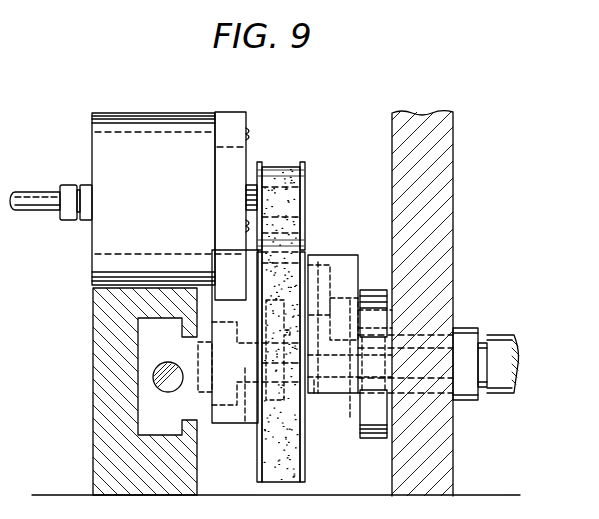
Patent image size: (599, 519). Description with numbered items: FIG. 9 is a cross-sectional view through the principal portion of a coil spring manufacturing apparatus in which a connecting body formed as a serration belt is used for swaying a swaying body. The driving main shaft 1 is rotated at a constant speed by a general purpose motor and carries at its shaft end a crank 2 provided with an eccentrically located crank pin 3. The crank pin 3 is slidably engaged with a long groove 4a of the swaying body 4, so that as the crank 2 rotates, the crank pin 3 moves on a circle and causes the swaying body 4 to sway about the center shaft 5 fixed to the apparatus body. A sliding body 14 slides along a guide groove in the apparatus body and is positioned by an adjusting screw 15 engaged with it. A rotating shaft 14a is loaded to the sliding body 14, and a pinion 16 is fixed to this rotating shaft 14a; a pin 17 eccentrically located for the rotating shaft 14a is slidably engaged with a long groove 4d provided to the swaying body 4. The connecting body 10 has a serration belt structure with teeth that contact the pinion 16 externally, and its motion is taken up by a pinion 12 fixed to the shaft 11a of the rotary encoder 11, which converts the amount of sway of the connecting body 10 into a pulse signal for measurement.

The driving main shaft 1 is at (498, 350).
The crank 2 is at (371, 292).
The crank pin 3 is at (366, 290).
The swaying body 4 is at (338, 256).
The long groove 4a is at (349, 420).
The long groove 4d is at (316, 396).
The center shaft 5 is at (490, 368).
The connecting body 10 is at (287, 206).
The rotary encoder 11 is at (175, 130).
The shaft of rotary encoder 11a is at (250, 187).
The pinion 12 is at (305, 178).
The sliding body 14 is at (212, 424).
The rotating shaft 14a is at (250, 365).
The adjusting screw 15 is at (157, 378).
The pinion 16 is at (302, 440).
The pin 17 is at (318, 257).